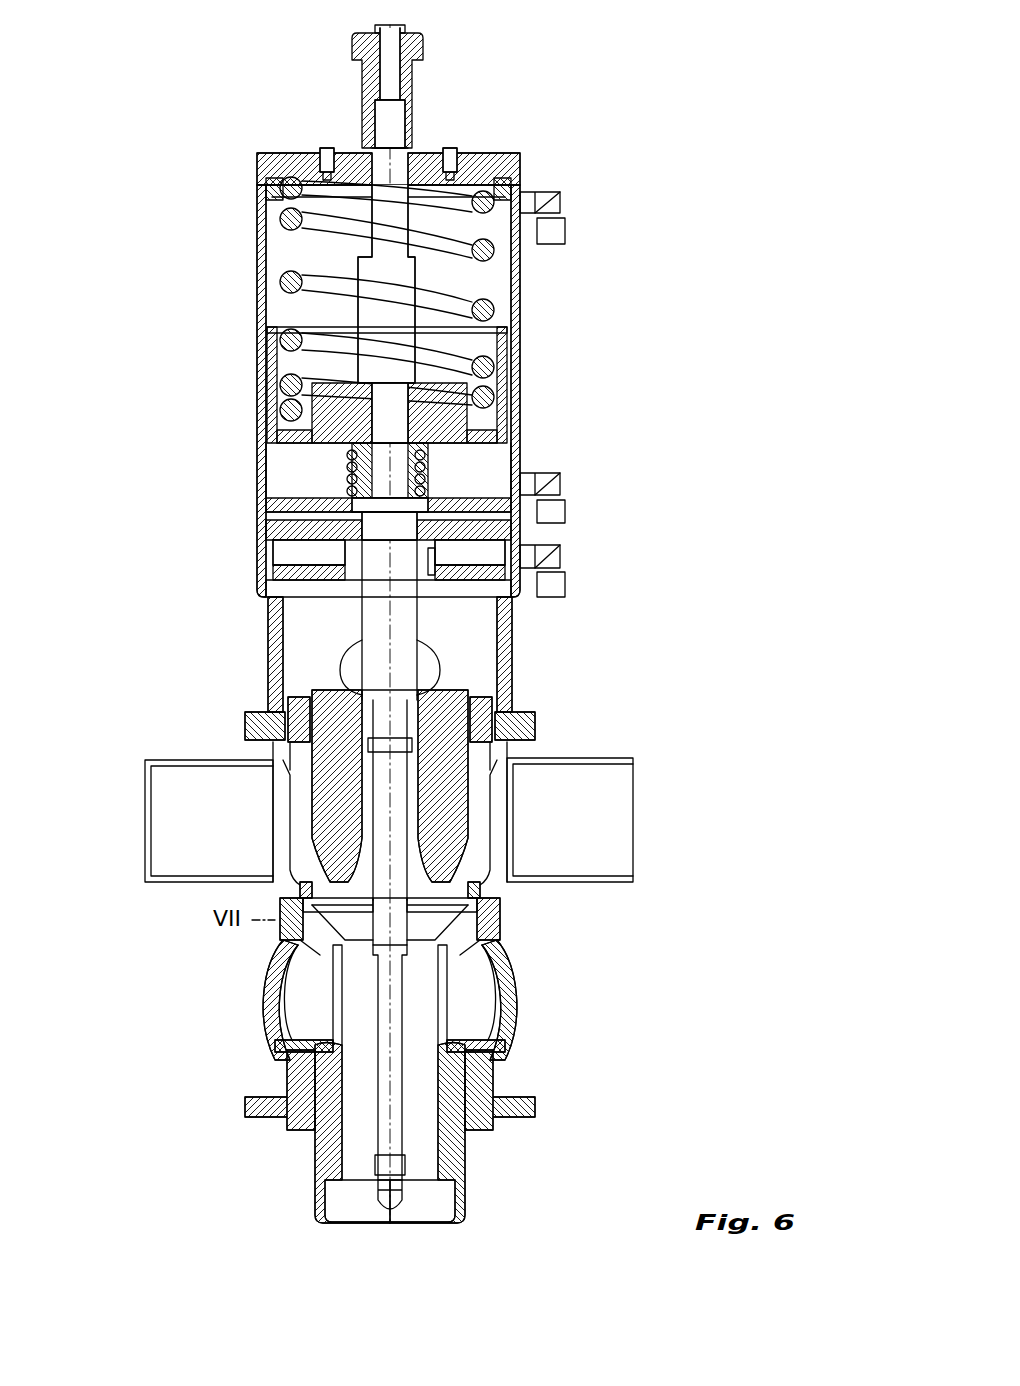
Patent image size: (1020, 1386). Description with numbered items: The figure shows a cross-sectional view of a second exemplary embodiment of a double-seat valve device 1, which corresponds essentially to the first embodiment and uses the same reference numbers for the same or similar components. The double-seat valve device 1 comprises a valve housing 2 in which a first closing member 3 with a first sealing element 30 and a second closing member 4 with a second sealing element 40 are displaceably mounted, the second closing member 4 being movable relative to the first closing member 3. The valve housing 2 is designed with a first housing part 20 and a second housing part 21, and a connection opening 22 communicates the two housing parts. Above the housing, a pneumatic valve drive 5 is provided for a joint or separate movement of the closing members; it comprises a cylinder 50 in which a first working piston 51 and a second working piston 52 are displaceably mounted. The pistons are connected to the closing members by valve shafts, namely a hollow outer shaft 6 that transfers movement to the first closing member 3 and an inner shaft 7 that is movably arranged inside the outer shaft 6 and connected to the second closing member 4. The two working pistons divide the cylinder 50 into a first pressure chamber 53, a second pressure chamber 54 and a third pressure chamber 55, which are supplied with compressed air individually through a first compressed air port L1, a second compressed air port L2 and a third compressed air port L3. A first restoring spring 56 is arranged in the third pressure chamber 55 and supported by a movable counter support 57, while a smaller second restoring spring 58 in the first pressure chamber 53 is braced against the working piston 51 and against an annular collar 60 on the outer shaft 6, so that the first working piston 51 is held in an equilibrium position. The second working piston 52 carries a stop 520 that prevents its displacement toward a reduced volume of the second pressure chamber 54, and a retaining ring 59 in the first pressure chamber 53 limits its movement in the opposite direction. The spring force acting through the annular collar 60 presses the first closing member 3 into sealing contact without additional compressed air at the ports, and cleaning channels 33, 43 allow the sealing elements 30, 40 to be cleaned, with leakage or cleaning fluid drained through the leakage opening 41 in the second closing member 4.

The double-seat valve device 1 is at (572, 100).
The valve housing 2 is at (582, 720).
The first closing member 3 is at (487, 855).
The second closing member 4 is at (515, 993).
The pneumatic valve drive 5 is at (612, 296).
The outer shaft 6 is at (370, 600).
The inner shaft 7 is at (380, 790).
The first housing part 20 is at (610, 758).
The second housing part 21 is at (518, 1010).
The connection opening 22 is at (262, 1018).
The first sealing element 30 is at (500, 898).
The cleaning channel 33 is at (330, 880).
The second sealing element 40 is at (500, 930).
The leakage opening 41 is at (350, 1138).
The cleaning channel 43 is at (265, 960).
The cylinder 50 is at (505, 382).
The first working piston 51 is at (350, 470).
The second working piston 52 is at (330, 530).
The first pressure chamber 53 is at (485, 465).
The second pressure chamber 54 is at (485, 548).
The third pressure chamber 55 is at (485, 345).
The first restoring spring 56 is at (290, 283).
The counter support 57 is at (262, 330).
The second restoring spring 58 is at (340, 485).
The retaining ring 59 is at (345, 503).
The annular collar 60 is at (320, 548).
The stop 520 is at (430, 565).
The first compressed air port L1 is at (545, 490).
The second compressed air port L2 is at (550, 585).
The third compressed air port L3 is at (545, 195).